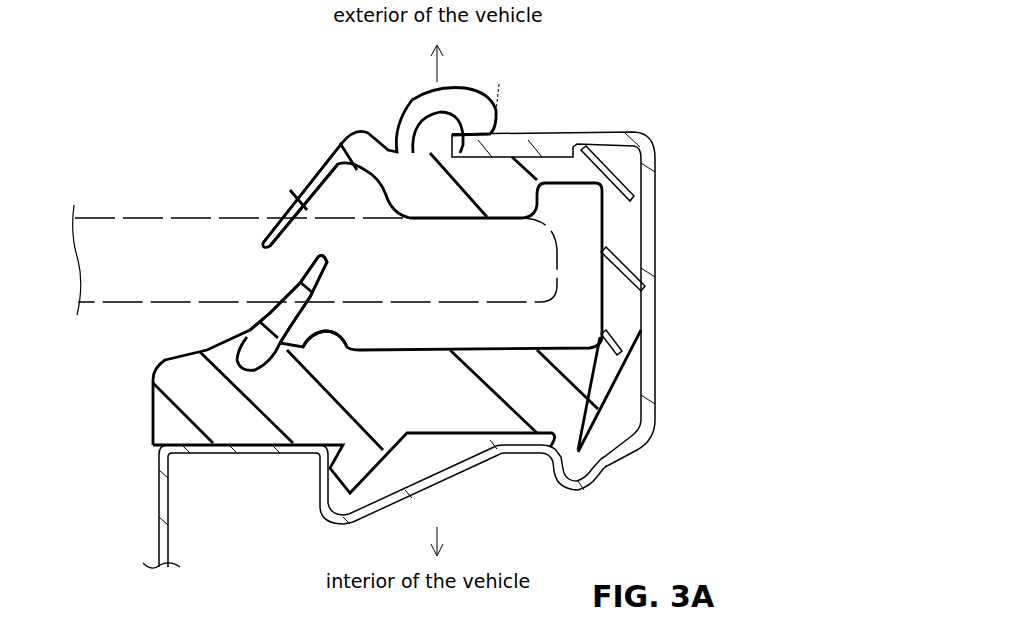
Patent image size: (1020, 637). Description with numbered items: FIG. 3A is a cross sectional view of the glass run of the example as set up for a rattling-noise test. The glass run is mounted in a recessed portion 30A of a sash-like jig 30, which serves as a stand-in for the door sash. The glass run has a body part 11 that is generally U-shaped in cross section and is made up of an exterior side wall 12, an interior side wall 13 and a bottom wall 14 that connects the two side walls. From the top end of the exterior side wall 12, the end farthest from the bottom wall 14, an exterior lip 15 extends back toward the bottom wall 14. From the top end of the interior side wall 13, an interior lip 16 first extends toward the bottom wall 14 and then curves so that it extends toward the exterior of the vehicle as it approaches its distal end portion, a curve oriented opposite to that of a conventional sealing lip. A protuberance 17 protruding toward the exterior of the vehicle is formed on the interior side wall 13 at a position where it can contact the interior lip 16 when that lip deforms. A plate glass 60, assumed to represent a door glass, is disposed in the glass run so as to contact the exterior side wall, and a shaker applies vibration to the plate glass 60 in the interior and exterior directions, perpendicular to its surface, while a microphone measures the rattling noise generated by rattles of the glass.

The body part 11 is at (664, 250).
The exterior side wall 12 is at (558, 190).
The interior side wall 13 is at (560, 348).
The bottom wall 14 is at (603, 250).
The exterior lip 15 is at (310, 180).
The interior lip 16 is at (245, 337).
The protuberance 17 is at (325, 337).
The sash-like jig 30 is at (157, 500).
The recessed portion 30A is at (647, 392).
The plate glass 60 is at (102, 218).